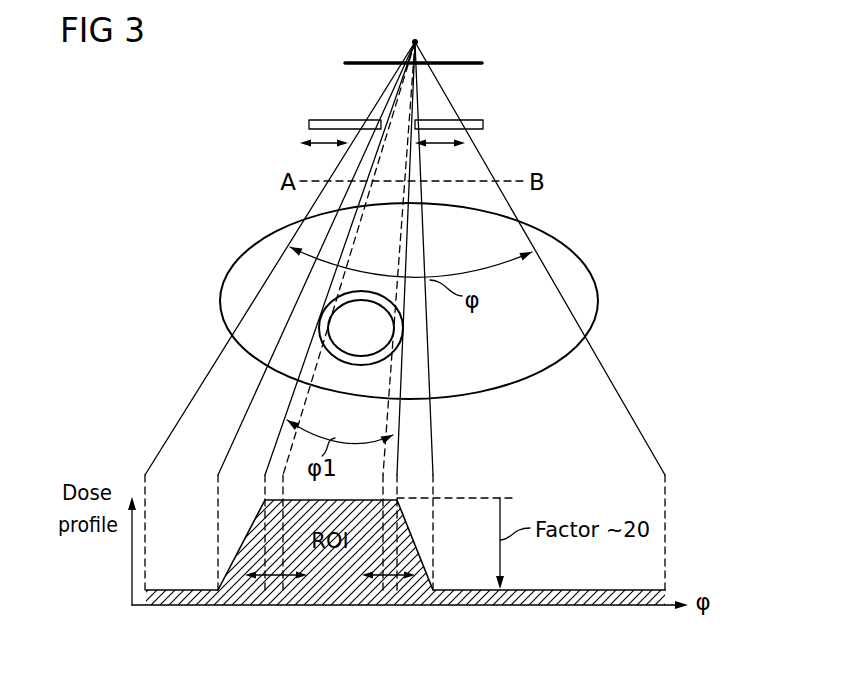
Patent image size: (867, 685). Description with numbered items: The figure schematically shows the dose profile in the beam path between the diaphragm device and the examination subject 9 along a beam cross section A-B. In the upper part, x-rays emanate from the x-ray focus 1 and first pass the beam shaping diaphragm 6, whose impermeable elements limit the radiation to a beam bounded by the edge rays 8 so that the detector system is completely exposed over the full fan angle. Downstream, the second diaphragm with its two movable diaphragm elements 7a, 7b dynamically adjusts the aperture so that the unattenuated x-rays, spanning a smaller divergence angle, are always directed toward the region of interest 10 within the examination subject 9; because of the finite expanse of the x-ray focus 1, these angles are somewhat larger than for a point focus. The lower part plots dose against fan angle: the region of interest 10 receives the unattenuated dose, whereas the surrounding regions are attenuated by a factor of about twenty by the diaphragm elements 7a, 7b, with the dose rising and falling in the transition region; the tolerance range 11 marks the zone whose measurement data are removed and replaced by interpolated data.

The x-ray focus 1 is at (411, 41).
The beam shaping diaphragm 6 is at (465, 62).
The movable diaphragm element 7a is at (310, 124).
The movable diaphragm element 7b is at (484, 125).
The edge rays 8 is at (198, 392).
The examination subject 9 is at (578, 275).
The region of interest 10 is at (387, 328).
The tolerance range 11 is at (273, 575).